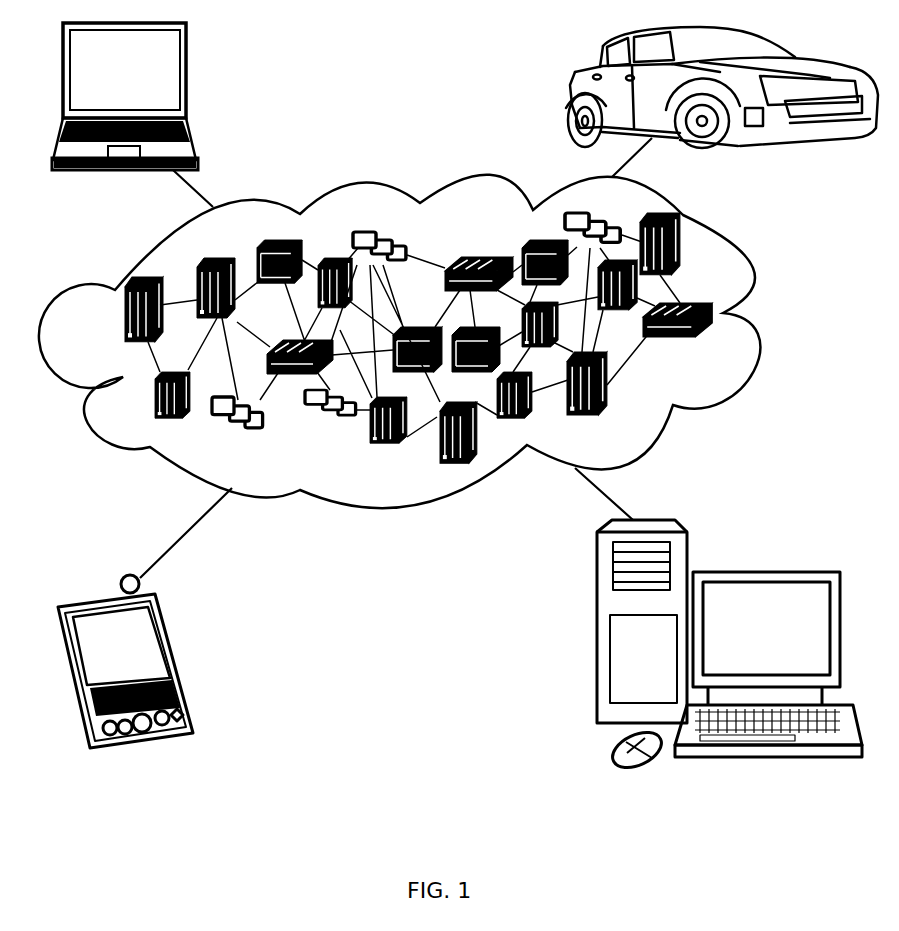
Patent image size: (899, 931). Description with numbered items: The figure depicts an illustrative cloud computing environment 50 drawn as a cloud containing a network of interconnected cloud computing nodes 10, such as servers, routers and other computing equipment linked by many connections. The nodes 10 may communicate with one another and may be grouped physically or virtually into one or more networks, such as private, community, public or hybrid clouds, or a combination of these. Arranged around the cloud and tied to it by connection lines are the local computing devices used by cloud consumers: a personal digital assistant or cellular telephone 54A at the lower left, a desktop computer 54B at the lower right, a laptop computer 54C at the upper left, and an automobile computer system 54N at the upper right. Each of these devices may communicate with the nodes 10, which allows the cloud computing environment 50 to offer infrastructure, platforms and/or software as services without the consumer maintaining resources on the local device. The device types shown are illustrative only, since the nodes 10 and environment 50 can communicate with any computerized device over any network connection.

The cloud computing nodes 10 is at (458, 399).
The cloud computing environment 50 is at (766, 318).
The personal digital assistant or cellular telephone 54A is at (178, 656).
The desktop computer 54B is at (762, 573).
The laptop computer 54C is at (186, 80).
The automobile computer system 54N is at (571, 97).